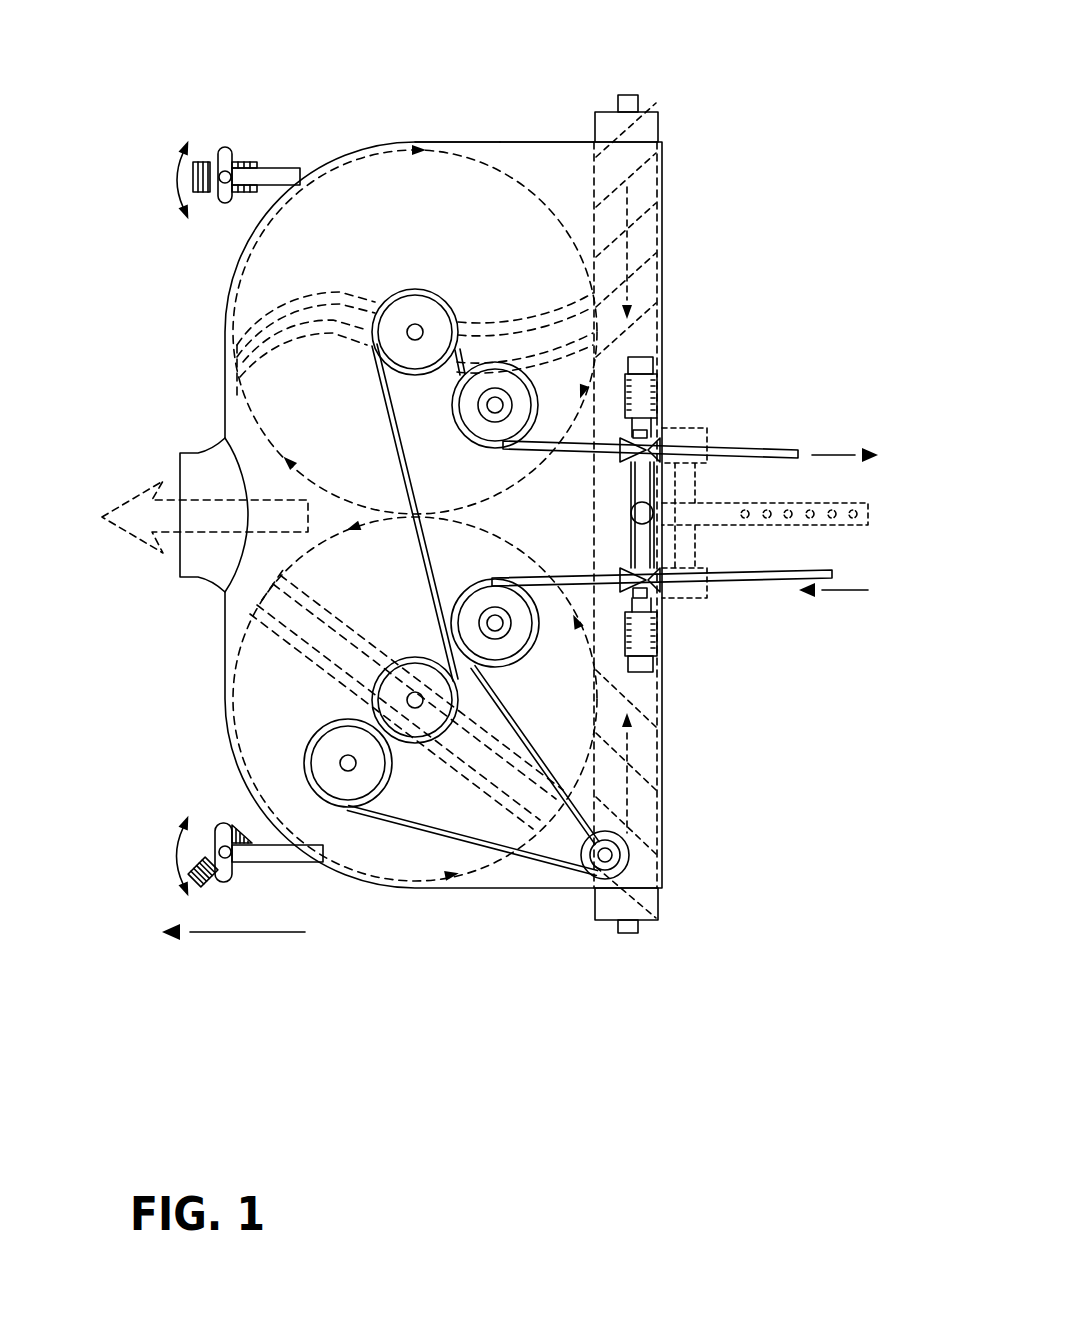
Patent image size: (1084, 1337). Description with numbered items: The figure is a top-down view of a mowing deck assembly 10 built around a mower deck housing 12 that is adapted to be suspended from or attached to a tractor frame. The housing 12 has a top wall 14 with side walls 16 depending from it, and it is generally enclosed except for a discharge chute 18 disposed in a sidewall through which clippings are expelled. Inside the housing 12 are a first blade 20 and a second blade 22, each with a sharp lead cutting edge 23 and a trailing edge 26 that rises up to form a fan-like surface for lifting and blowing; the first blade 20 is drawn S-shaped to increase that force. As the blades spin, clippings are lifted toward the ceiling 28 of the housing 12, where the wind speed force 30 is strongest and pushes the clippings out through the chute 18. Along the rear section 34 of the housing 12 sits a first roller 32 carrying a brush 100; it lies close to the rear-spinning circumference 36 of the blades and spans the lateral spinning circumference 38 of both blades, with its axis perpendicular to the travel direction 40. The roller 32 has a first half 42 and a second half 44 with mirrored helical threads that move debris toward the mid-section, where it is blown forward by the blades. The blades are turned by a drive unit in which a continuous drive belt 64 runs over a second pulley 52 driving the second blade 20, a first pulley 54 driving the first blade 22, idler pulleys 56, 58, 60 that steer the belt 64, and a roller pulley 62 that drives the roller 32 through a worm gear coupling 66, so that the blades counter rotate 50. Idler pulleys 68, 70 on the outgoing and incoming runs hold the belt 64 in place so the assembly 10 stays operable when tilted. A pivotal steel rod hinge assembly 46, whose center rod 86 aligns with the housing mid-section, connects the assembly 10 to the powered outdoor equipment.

The mowing deck assembly 10 is at (252, 96).
The mower deck housing 12 is at (218, 312).
The top wall 14 is at (555, 165).
The side walls 16 is at (497, 143).
The discharge chute 18 is at (208, 565).
The first blade 20 is at (268, 337).
The second blade 22 is at (283, 613).
The lead cutting edge 23 is at (280, 310).
The trailing edge 26 is at (282, 350).
The ceiling 28 is at (580, 492).
The wind speed force 30 is at (138, 513).
The first roller 32 is at (624, 122).
The rear section 34 is at (663, 243).
The rear-spinning circumference 36 is at (595, 707).
The lateral spinning circumference 38 is at (410, 147).
The travel direction 40 is at (243, 932).
The first half 42 is at (655, 815).
The second half 44 is at (648, 272).
The steel rod hinge assembly 46 is at (648, 660).
The counter rotation 50 is at (577, 410).
The second pulley 52 is at (438, 328).
The first pulley 54 is at (423, 720).
The idler pulley 56 is at (350, 777).
The idler pulley 58 is at (507, 383).
The idler pulley 60 is at (507, 645).
The roller pulley 62 is at (620, 863).
The drive belt 64 is at (783, 447).
The worm gear coupling 66 is at (607, 857).
The idler pulley 68 is at (656, 440).
The idler pulley 70 is at (657, 600).
The center rod 86 is at (870, 513).
The brush 100 is at (637, 770).